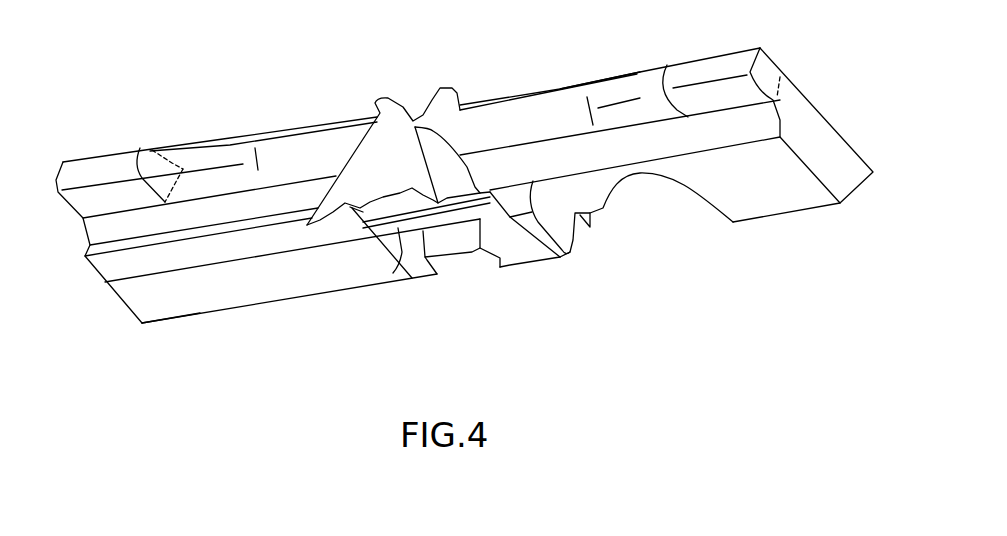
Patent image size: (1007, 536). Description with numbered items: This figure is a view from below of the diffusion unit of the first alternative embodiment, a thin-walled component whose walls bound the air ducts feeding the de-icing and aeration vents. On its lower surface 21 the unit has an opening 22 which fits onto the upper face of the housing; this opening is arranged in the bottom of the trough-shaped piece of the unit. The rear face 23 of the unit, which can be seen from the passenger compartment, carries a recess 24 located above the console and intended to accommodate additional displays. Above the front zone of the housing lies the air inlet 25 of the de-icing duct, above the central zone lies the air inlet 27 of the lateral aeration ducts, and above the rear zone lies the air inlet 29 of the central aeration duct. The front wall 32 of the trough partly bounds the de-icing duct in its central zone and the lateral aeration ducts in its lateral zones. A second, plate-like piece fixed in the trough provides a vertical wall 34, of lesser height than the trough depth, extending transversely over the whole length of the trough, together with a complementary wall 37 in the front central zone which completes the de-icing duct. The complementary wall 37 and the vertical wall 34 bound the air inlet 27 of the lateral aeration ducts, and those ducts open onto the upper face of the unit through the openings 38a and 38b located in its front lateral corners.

The lower surface 21 is at (253, 290).
The opening 22 is at (378, 233).
The rear face 23 is at (189, 324).
The recess 24 is at (466, 257).
The air inlet of the de-icing duct 25 is at (404, 156).
The air inlet of the lateral aeration ducts 27 is at (485, 217).
The air inlet of the central aeration duct 29 is at (452, 230).
The front wall 32 is at (563, 83).
The vertical wall 34 is at (407, 260).
The complementary wall 37 is at (352, 208).
The opening 38a is at (155, 148).
The opening 38b is at (726, 72).